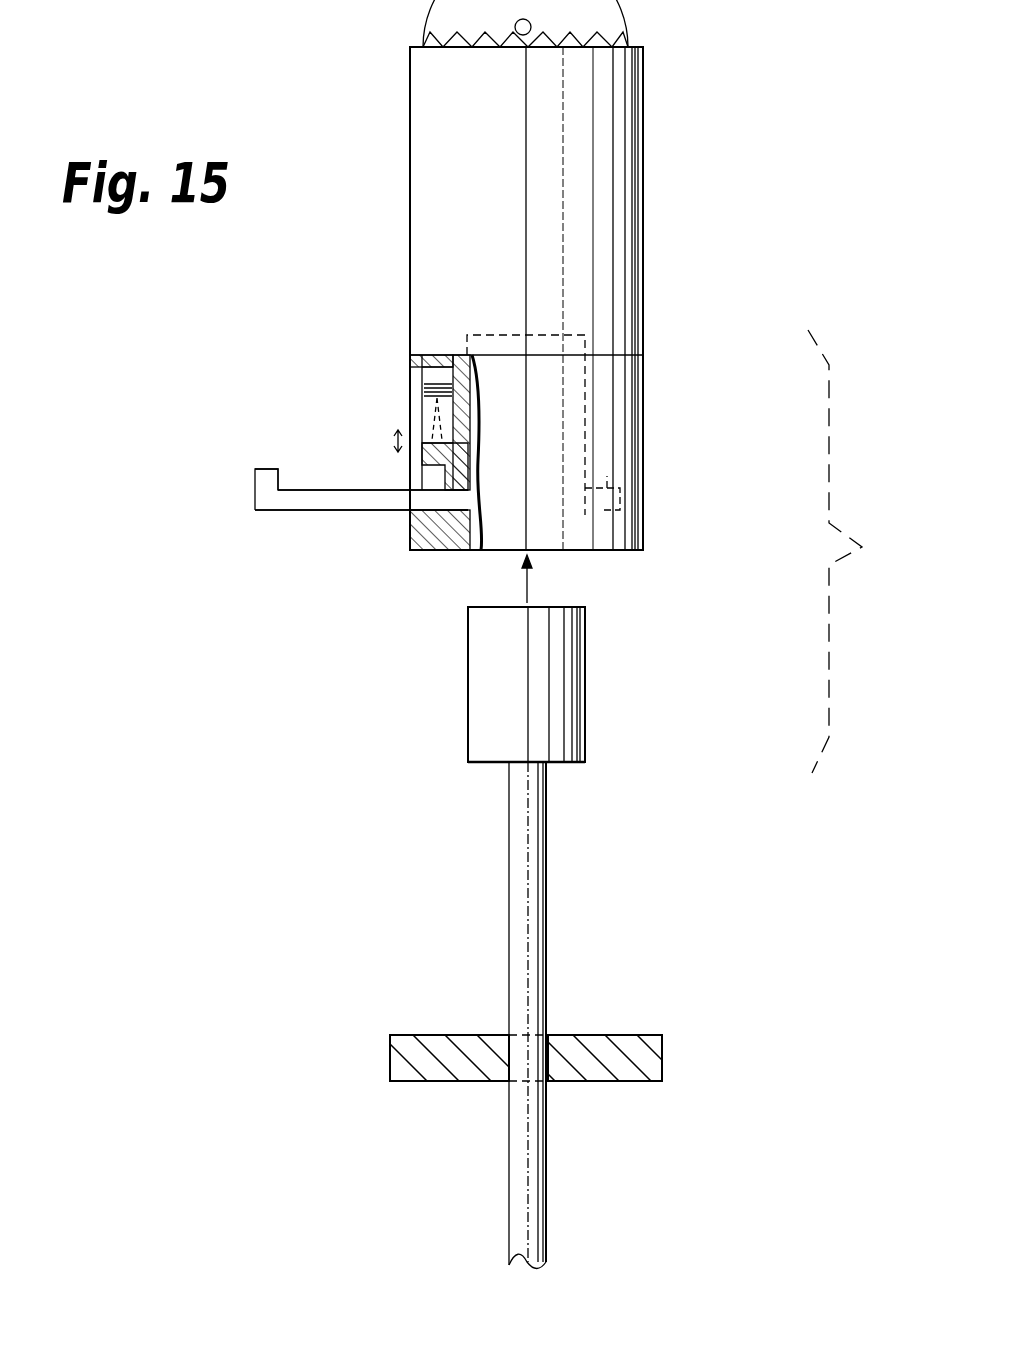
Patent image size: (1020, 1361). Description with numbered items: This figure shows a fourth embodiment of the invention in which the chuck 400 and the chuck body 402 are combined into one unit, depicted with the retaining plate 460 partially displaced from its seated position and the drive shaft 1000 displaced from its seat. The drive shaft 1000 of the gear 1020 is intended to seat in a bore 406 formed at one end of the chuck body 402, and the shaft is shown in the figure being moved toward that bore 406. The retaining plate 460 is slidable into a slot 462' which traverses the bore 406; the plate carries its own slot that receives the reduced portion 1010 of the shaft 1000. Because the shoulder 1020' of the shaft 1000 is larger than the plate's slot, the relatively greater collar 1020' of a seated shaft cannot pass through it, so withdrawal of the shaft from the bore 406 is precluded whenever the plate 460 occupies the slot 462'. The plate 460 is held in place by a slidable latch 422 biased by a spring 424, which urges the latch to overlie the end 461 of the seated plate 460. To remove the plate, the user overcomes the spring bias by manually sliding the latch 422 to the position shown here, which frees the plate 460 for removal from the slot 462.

The chuck 400 is at (440, 95).
The chuck body 402 is at (627, 528).
The bore 406 is at (575, 555).
The slidable latch 422 is at (413, 378).
The spring 424 is at (437, 406).
The retaining plate 460 is at (292, 482).
The end of plate 461 is at (256, 492).
The slot 462 is at (356, 526).
The slot 462' is at (675, 477).
The drive shaft 1000 is at (481, 642).
The reduced portion 1010 is at (518, 862).
The gear 1020 is at (477, 1032).
The shoulder 1020' is at (478, 790).